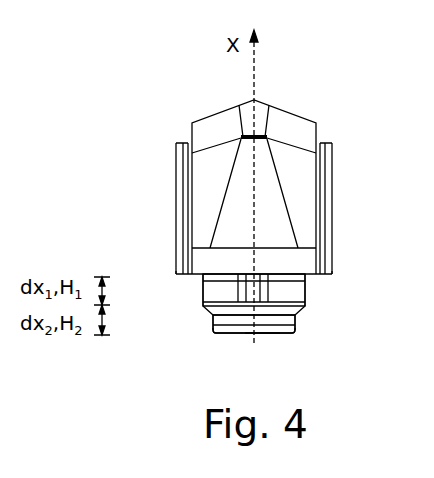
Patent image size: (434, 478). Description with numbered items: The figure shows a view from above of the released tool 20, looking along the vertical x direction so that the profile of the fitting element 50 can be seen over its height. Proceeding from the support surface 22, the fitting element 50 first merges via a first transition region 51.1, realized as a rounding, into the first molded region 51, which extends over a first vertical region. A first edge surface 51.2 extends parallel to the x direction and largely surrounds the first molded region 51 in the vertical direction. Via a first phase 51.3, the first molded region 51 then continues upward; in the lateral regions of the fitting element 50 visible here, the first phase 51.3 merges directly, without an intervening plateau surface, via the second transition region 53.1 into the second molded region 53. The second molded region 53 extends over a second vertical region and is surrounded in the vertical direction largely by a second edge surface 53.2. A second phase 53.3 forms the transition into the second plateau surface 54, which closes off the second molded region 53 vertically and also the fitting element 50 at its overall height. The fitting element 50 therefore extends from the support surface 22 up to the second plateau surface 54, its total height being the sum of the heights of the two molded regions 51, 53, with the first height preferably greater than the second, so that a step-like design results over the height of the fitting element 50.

The illumination module housing 20 is at (342, 198).
The support surface 22 is at (188, 276).
The fitting element 50 is at (274, 329).
The first molded region 51 is at (278, 296).
The first transition region 51.1 is at (305, 280).
The first edge surface 51.2 is at (305, 290).
The first phase 51.3 is at (303, 305).
The second molded region 53 is at (270, 355).
The second transition region 53.1 is at (297, 315).
The second edge surface 53.2 is at (294, 325).
The second phase 53.3 is at (291, 333).
The second plateau surface 54 is at (263, 334).